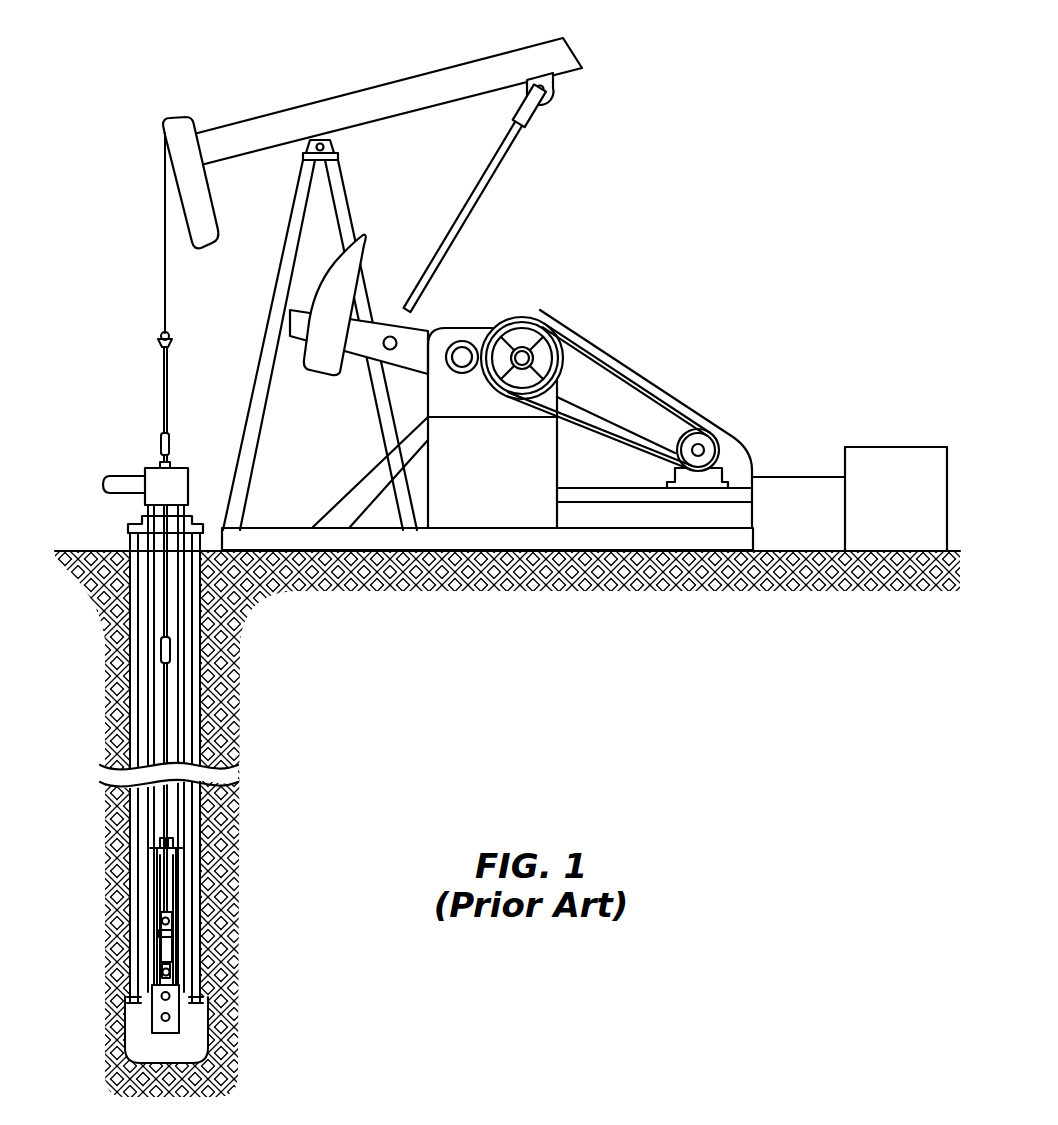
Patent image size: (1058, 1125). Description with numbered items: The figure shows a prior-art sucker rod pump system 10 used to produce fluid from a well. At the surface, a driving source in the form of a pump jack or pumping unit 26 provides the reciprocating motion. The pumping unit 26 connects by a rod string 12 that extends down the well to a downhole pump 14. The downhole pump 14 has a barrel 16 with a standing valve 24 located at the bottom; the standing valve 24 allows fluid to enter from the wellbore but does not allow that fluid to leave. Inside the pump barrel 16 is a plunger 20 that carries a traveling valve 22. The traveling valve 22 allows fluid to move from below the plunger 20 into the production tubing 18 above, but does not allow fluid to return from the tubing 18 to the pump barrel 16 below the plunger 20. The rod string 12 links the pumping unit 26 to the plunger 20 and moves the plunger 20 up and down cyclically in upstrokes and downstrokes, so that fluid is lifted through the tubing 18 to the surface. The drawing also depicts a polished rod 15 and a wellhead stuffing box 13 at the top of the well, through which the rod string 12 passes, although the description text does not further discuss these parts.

The sucker rod pump system 10 is at (240, 51).
The pumping unit 26 is at (619, 287).
The polished rod 15 is at (165, 405).
The wellhead stuffing box 13 is at (153, 467).
The rod string 12 is at (165, 697).
The production tubing 18 is at (148, 735).
The downhole pump 14 is at (113, 916).
The barrel 16 is at (158, 883).
The plunger 20 is at (163, 928).
The traveling valve 22 is at (163, 937).
The standing valve 24 is at (163, 975).